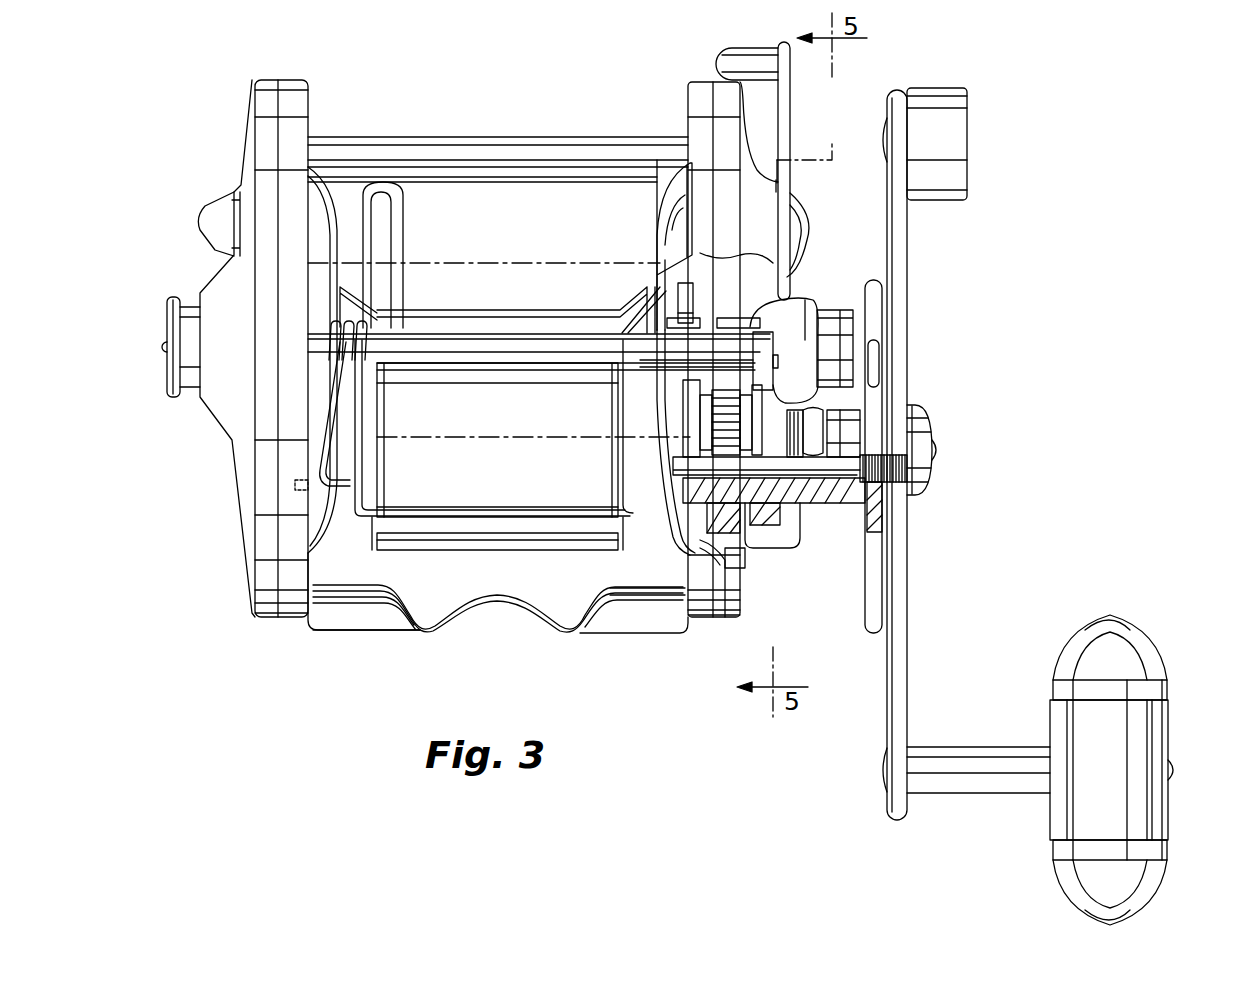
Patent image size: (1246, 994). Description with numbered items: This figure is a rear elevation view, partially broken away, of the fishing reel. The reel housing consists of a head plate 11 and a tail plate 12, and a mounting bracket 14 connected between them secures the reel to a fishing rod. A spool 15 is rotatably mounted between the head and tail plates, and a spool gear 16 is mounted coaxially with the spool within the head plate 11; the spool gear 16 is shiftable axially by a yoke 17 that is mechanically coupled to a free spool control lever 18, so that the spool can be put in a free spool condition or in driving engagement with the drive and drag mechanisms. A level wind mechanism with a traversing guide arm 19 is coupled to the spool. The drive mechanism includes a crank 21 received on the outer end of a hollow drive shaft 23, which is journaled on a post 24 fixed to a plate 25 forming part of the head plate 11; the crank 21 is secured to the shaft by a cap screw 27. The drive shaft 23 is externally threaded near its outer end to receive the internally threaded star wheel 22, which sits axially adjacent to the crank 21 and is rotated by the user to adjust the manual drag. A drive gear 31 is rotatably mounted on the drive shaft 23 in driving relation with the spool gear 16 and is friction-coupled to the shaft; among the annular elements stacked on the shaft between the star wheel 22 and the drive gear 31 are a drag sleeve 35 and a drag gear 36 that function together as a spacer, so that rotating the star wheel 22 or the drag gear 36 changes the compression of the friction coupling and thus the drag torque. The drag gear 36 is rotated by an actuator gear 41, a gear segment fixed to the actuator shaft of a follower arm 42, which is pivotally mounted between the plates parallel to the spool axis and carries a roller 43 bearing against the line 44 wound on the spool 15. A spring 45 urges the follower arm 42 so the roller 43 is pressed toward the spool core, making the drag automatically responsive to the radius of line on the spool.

The head plate 11 is at (688, 82).
The tail plate 12 is at (222, 425).
The mounting bracket 14 is at (498, 385).
The spool 15 is at (660, 232).
The spool gear 16 is at (752, 320).
The yoke 17 is at (715, 296).
The free spool control lever 18 is at (786, 125).
The traversing guide arm 19 is at (402, 230).
The crank 21 is at (1140, 648).
The star wheel 22 is at (868, 610).
The drive shaft 23 is at (853, 483).
The post 24 is at (670, 520).
The plate 25 is at (685, 437).
The cap screw 27 is at (925, 430).
The drive gear 31 is at (735, 540).
The drag sleeve 35 is at (815, 503).
The drag gear 36 is at (760, 506).
The actuator gear 41 is at (762, 378).
The follower arm 42 is at (521, 355).
The roller 43 is at (505, 543).
The line 44 is at (487, 262).
The spring 45 is at (355, 517).